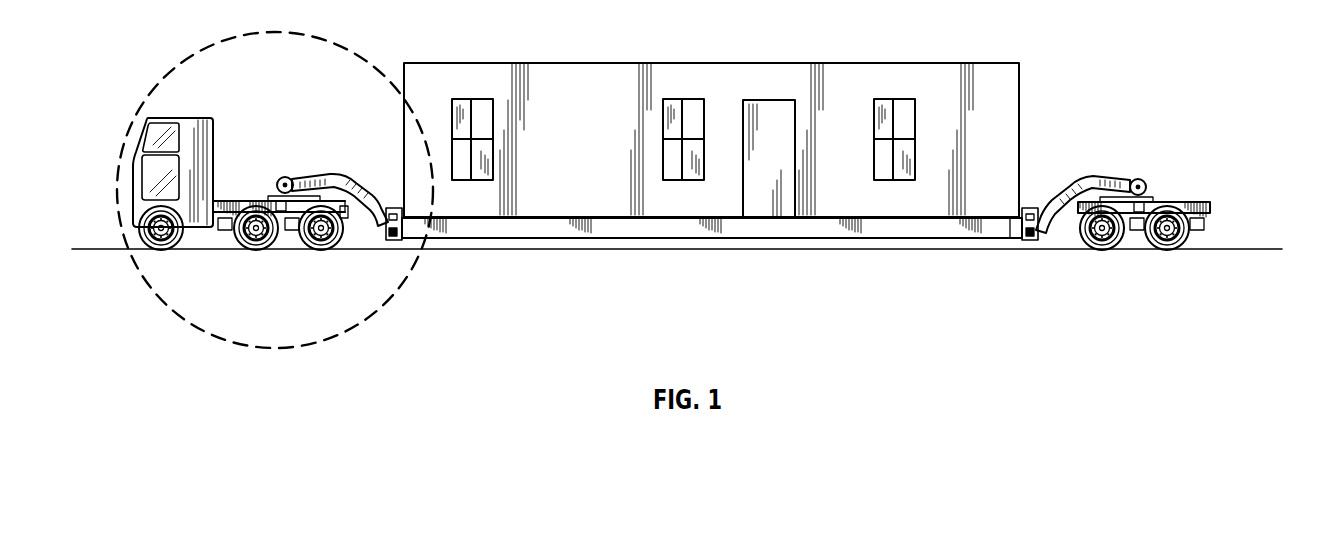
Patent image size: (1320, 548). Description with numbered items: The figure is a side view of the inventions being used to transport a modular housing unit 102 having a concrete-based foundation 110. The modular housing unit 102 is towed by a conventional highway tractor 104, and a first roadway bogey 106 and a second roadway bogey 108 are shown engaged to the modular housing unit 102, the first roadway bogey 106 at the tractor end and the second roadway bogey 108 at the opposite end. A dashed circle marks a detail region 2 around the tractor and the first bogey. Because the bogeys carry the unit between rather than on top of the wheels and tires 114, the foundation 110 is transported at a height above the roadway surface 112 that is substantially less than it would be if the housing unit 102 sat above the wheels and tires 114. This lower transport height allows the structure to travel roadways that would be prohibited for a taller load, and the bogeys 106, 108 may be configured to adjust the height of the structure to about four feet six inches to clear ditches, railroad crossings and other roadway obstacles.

The detail region 2 is at (170, 308).
The modular housing unit 102 is at (903, 42).
The conventional highway tractor 104 is at (170, 117).
The first roadway bogey 106 is at (355, 185).
The second roadway bogey 108 is at (1075, 181).
The foundation 110 is at (662, 232).
The roadway surface 112 is at (1242, 247).
The wheels and tires 114 is at (322, 247).